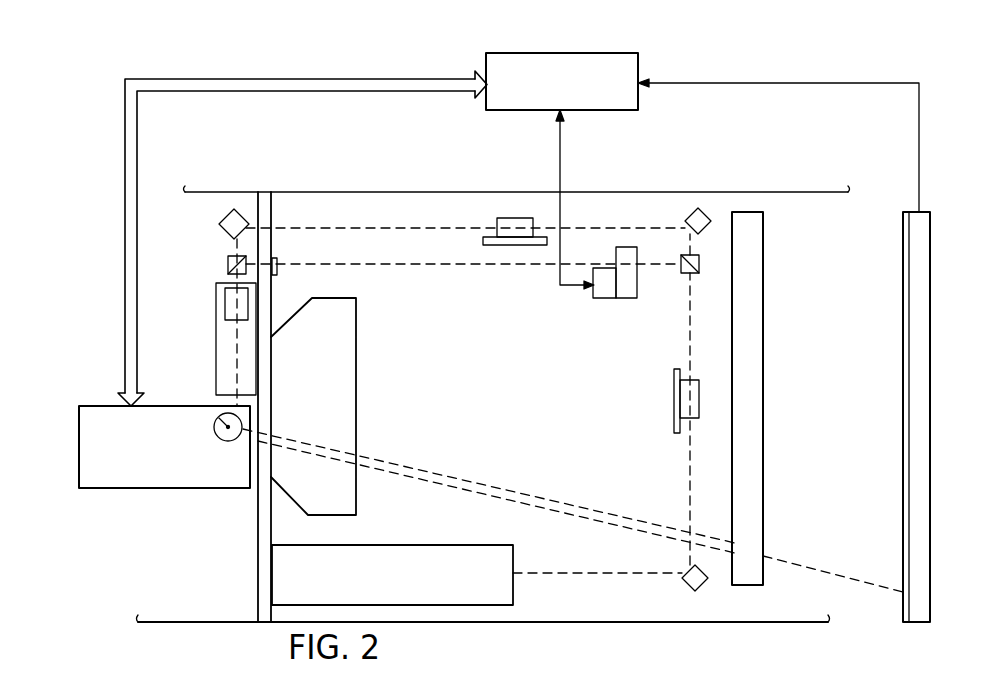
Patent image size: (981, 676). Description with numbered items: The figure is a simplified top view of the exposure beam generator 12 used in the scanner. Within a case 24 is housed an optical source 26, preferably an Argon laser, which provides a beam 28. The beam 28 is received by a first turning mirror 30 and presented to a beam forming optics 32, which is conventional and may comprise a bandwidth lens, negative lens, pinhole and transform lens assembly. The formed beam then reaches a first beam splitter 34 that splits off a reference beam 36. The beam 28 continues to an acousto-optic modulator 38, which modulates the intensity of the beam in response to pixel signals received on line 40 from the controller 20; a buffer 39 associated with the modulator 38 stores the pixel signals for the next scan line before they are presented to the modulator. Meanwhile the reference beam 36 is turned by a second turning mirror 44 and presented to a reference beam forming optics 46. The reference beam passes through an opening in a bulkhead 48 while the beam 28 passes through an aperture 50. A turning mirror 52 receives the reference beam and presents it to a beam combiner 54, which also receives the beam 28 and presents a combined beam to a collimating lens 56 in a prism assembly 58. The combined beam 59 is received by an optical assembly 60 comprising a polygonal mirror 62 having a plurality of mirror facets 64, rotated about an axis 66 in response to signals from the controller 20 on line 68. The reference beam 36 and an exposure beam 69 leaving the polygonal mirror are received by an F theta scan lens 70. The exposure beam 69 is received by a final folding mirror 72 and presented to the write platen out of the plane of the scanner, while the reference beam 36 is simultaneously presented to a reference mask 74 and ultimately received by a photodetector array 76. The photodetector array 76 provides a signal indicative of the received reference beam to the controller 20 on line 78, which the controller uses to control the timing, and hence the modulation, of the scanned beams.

The exposure beam generator 12 is at (451, 48).
The controller 20 is at (629, 53).
The case 24 is at (540, 623).
The optical source 26 is at (448, 545).
The beam 28 is at (590, 573).
The first turning mirror 30 is at (700, 591).
The beam forming optics 32 is at (668, 391).
The first beam splitter 34 is at (699, 263).
The reference beam 36 is at (617, 228).
The acousto-optic modulator 38 is at (637, 292).
The buffer 39 is at (600, 298).
The line 40 is at (560, 180).
The second turning mirror 44 is at (698, 208).
The reference beam forming optics 46 is at (505, 218).
The bulkhead 48 is at (272, 208).
The aperture 50 is at (277, 266).
The turning mirror 52 is at (221, 225).
The beam combiner 54 is at (229, 259).
The collimating lens 56 is at (225, 300).
The prism assembly 58 is at (216, 336).
The combined beam 59 is at (235, 373).
The optical assembly 60 is at (100, 406).
The polygonal mirror 62 is at (221, 446).
The mirror facets 64 is at (242, 424).
The axis 66 is at (219, 418).
The line 68 is at (125, 201).
The exposure beam 69 is at (523, 496).
The F theta scan lens 70 is at (356, 352).
The final folding mirror 72 is at (763, 405).
The reference mask 74 is at (903, 323).
The photodetector array 76 is at (930, 421).
The line 78 is at (815, 83).